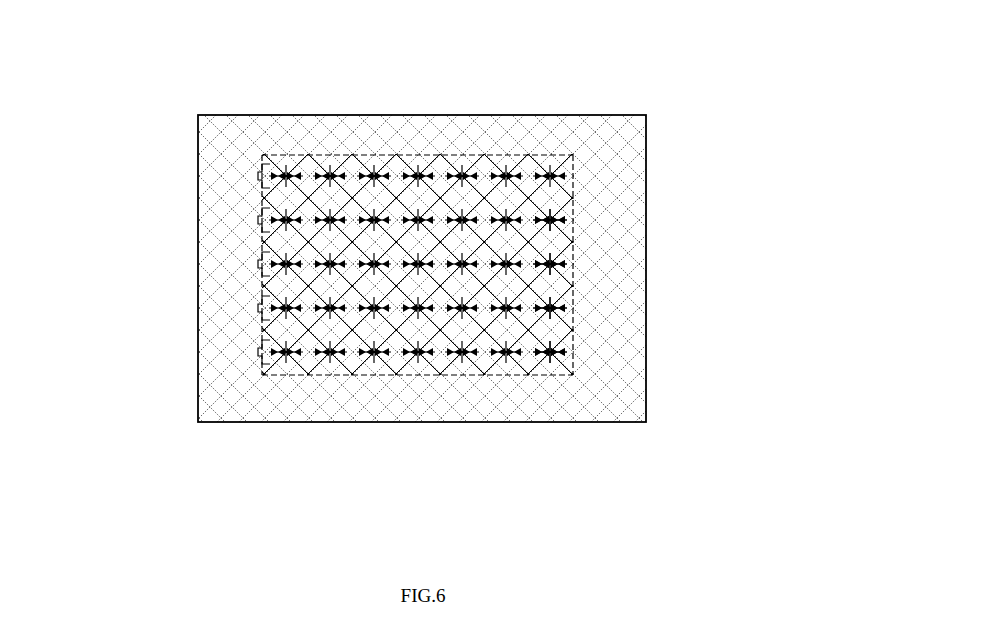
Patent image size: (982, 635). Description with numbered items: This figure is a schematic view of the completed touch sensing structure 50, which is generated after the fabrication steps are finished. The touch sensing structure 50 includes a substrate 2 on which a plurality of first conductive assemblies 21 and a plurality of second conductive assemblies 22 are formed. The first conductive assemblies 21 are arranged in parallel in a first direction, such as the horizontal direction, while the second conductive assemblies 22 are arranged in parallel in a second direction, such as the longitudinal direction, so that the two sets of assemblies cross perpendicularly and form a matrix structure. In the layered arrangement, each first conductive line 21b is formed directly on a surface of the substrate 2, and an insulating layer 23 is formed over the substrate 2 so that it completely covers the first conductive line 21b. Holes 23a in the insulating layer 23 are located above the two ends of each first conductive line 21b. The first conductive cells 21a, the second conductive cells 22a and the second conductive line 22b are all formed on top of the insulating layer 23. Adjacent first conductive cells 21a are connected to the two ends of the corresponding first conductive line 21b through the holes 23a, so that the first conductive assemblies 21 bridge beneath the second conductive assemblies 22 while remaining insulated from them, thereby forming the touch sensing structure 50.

The substrate 2 is at (585, 423).
The first conductive assemblies 21 is at (267, 300).
The first conductive cells 21a is at (300, 213).
The first conductive line 21b is at (505, 173).
The second conductive assemblies 22 is at (442, 378).
The second conductive cells 22a is at (553, 199).
The second conductive line 22b is at (553, 313).
The insulating layer 23 is at (237, 397).
The holes 23a is at (513, 172).
The touch sensing structure 50 is at (243, 95).